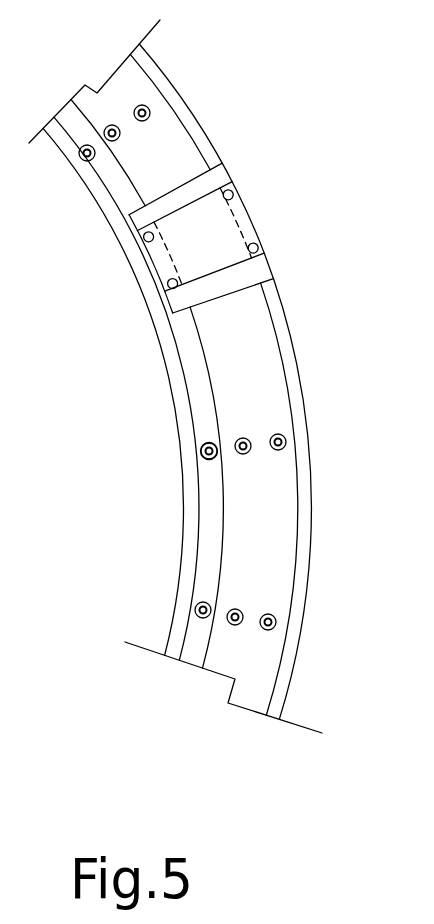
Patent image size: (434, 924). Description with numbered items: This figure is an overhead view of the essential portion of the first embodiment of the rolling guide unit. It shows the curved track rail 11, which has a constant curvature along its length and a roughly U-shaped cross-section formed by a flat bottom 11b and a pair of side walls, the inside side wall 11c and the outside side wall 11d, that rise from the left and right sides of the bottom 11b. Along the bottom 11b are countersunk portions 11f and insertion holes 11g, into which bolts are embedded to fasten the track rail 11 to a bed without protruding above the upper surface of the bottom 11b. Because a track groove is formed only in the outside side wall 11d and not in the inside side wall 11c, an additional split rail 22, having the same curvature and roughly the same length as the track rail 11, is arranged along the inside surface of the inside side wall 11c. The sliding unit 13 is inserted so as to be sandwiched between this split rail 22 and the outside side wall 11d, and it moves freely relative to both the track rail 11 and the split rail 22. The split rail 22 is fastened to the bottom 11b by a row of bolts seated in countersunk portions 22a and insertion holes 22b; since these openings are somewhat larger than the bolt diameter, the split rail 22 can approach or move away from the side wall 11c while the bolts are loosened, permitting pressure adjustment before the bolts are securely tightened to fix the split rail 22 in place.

The track rail 11 is at (206, 391).
The bottom 11b is at (228, 662).
The inside side wall 11c is at (183, 582).
The outside side wall 11d is at (298, 622).
The countersunk portions 11f is at (144, 104).
The insertion holes 11g is at (150, 113).
The sliding unit 13 is at (260, 214).
The split rail 22 is at (208, 525).
The countersunk portions 22a is at (208, 447).
The insertion holes 22b is at (208, 459).